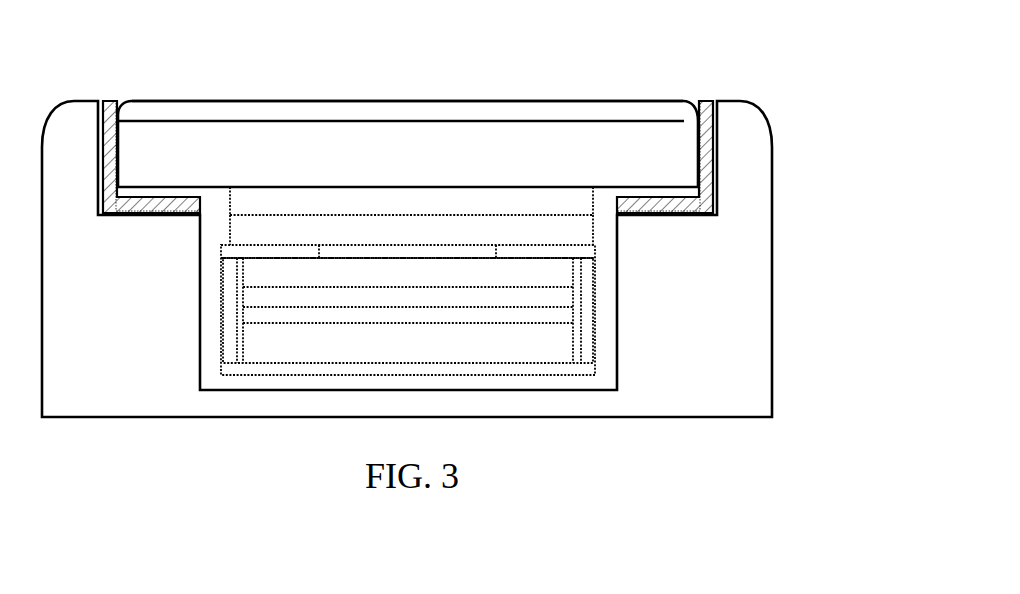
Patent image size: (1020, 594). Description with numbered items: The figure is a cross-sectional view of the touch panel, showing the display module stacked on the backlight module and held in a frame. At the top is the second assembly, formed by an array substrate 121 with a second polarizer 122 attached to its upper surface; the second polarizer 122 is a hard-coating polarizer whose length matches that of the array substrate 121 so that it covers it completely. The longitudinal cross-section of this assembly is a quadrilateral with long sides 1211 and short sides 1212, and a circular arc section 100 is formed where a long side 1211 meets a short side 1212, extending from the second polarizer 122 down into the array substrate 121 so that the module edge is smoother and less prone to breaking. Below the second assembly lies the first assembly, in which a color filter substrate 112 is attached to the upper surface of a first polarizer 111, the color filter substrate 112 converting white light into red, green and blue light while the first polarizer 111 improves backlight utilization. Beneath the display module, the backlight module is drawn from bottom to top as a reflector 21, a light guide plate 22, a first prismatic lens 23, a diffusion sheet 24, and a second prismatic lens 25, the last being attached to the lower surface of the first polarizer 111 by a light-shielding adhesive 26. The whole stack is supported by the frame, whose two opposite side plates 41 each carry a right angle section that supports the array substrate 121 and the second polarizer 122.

The circular arc section 100 is at (428, 134).
The array substrate 121 is at (683, 168).
The second polarizer 122 is at (660, 112).
The long side 1211 is at (118, 130).
The short side 1212 is at (262, 100).
The color filter substrate 112 is at (557, 205).
The first polarizer 111 is at (555, 232).
The reflector 21 is at (555, 372).
The light guide plate 22 is at (555, 345).
The first prismatic lens 23 is at (555, 315).
The diffusion sheet 24 is at (555, 295).
The second prismatic lens 25 is at (555, 278).
The light-shielding adhesive 26 is at (568, 255).
The side plate 41 is at (713, 395).